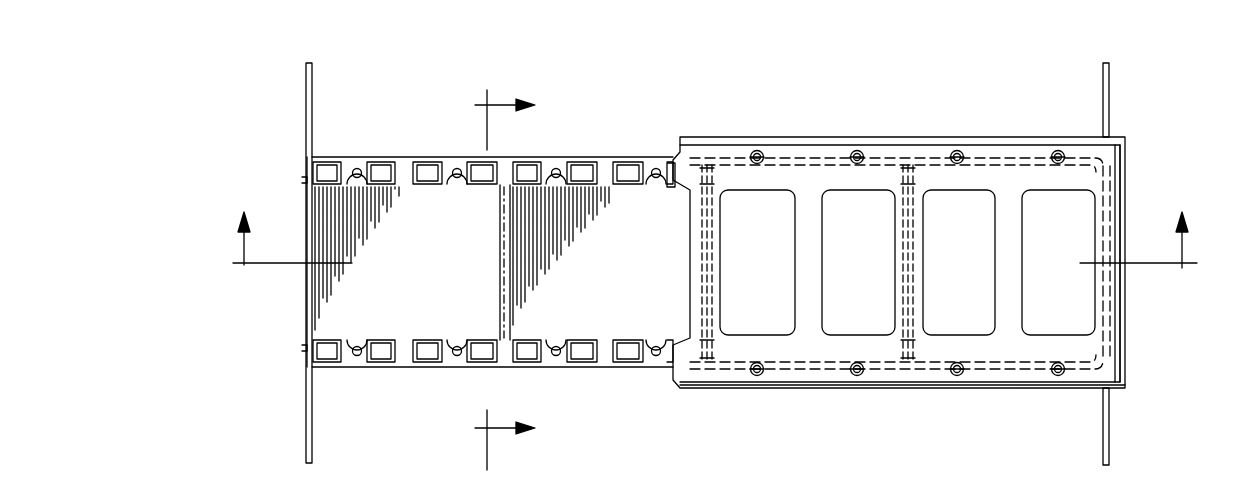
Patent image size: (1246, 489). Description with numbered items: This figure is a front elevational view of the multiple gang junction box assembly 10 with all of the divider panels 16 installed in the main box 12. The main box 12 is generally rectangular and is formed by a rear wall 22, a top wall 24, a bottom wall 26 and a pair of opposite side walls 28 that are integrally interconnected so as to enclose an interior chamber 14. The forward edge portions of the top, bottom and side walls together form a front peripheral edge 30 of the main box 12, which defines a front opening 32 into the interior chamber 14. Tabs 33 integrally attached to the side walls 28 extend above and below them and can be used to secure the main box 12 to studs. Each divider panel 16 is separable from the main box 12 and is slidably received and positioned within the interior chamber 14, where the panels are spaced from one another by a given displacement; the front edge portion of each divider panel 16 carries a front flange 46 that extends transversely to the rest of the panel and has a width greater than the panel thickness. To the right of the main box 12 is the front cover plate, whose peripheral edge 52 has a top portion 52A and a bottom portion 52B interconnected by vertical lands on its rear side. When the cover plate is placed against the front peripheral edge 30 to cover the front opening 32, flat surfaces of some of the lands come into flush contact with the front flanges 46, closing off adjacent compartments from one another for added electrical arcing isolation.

The multiple gang junction box assembly 10 is at (955, 88).
The main box 12 is at (710, 250).
The interior chamber 14 is at (904, 258).
The divider panel 16 is at (463, 262).
The rear wall 22 is at (604, 256).
The top wall 24 is at (523, 158).
The bottom wall 26 is at (545, 368).
The side wall 28 is at (307, 218).
The front peripheral edge 30 is at (410, 367).
The front opening 32 is at (388, 226).
The tab 33 is at (306, 120).
The front flange 46 is at (502, 300).
The peripheral edge 52 is at (925, 258).
The top portion of peripheral edge 52A is at (915, 140).
The bottom portion of peripheral edge 52B is at (975, 388).